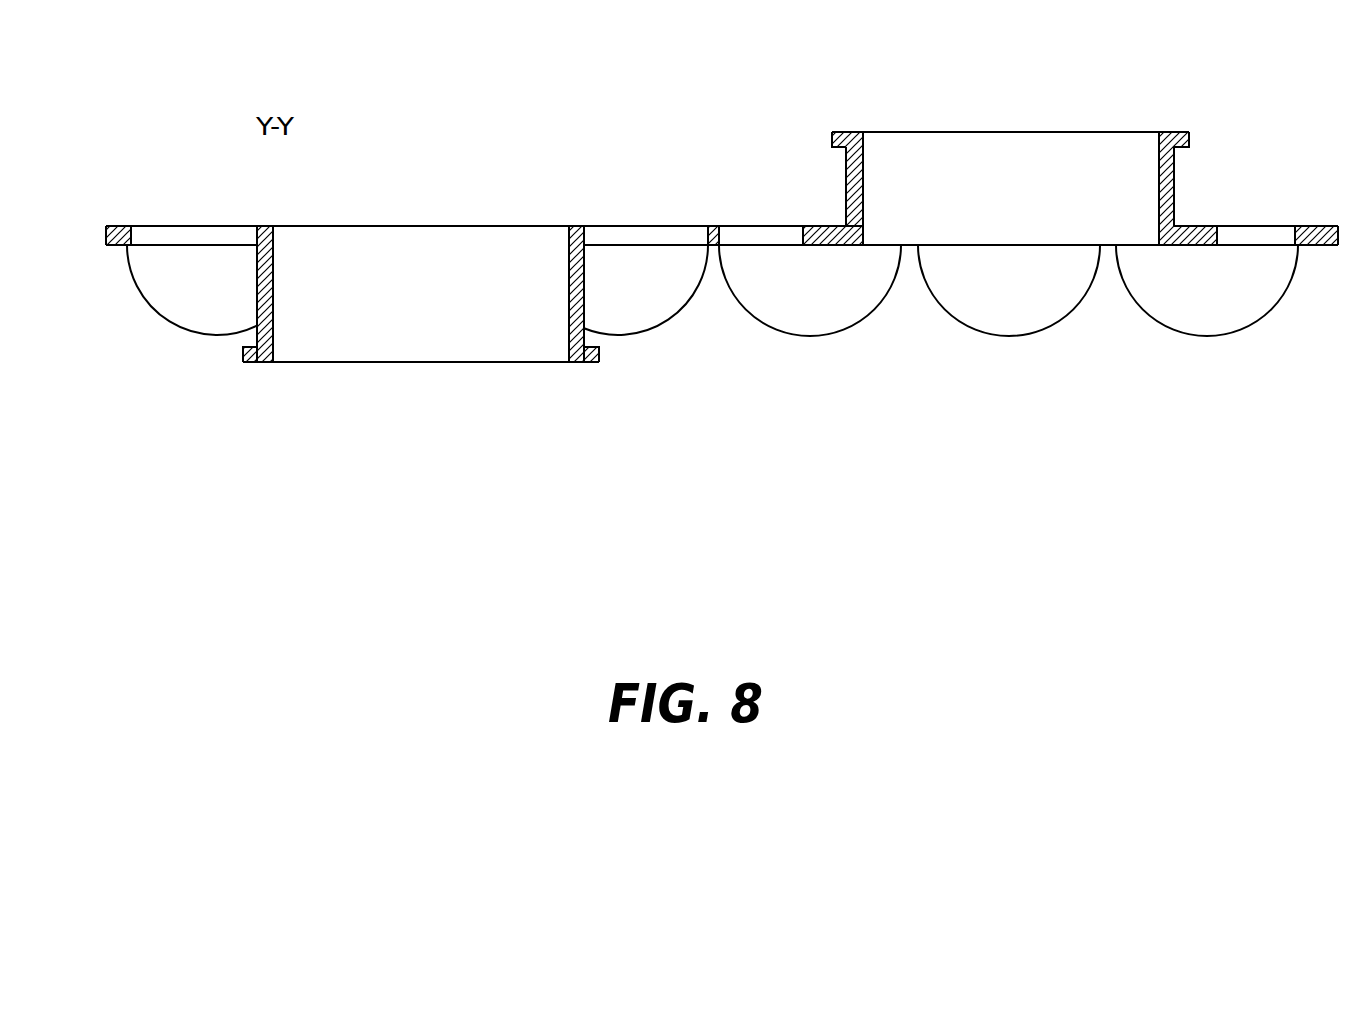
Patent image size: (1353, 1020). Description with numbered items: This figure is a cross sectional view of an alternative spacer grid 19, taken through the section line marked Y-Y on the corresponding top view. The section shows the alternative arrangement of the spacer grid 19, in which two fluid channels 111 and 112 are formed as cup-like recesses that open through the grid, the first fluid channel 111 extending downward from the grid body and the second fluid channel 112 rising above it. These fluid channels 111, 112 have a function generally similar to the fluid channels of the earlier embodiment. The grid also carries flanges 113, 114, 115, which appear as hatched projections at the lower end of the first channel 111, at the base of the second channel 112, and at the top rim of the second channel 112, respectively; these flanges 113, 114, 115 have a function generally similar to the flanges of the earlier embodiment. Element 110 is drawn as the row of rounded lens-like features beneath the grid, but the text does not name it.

The spacer grid 19 is at (116, 228).
The lens 110 is at (803, 330).
The fluid channel 111 is at (407, 347).
The fluid channel 112 is at (1003, 145).
The flange 113 is at (260, 362).
The flange 114 is at (820, 232).
The flange 115 is at (836, 130).